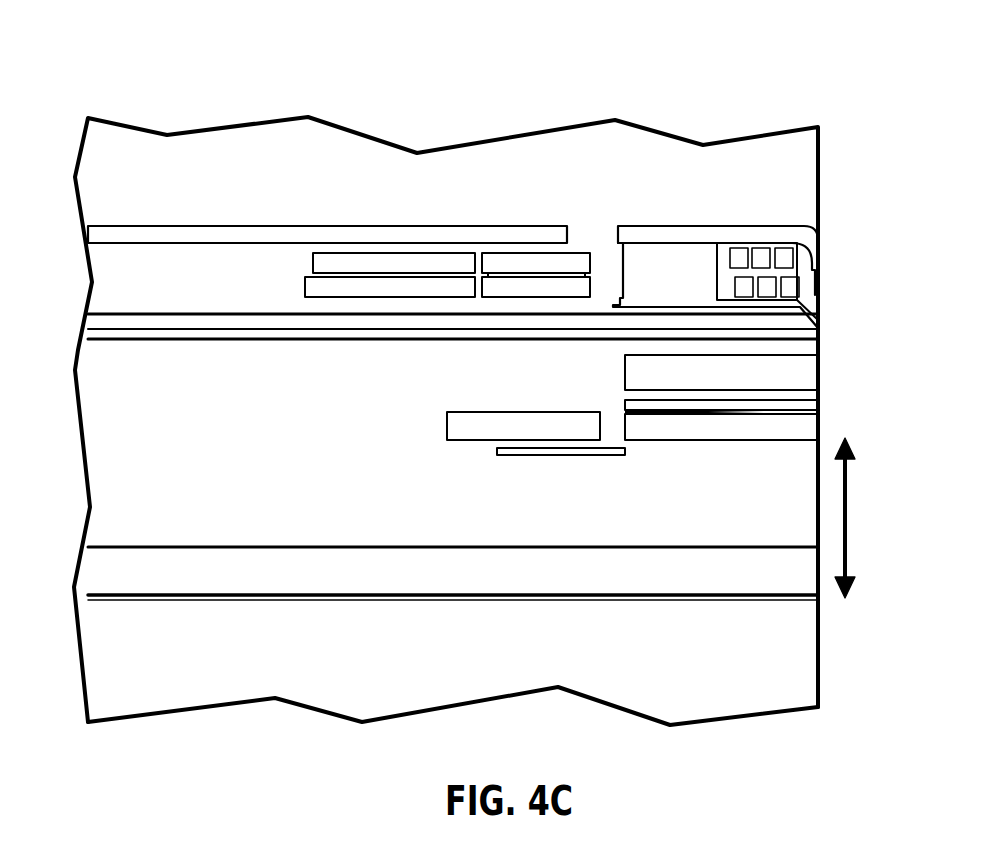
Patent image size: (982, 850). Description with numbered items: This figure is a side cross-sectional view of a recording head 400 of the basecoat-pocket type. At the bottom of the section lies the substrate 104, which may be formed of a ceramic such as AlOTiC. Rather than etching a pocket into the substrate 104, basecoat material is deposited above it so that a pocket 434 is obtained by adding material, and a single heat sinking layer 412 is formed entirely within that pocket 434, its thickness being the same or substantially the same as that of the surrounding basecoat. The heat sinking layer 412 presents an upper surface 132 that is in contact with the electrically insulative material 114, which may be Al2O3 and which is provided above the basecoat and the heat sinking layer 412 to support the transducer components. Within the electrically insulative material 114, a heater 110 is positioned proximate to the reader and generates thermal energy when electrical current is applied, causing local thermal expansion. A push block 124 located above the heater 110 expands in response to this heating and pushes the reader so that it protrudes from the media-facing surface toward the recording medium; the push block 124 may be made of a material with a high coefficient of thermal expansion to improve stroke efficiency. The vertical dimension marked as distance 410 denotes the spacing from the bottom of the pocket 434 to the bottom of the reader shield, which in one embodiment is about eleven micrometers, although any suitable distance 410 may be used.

The recording head 400 is at (868, 86).
The substrate 104 is at (138, 677).
The heater 110 is at (613, 452).
The electrically insulative material 114 is at (102, 382).
The push block 124 is at (458, 428).
The upper surface 132 is at (437, 547).
The distance 410 is at (845, 548).
The heat sinking layer 412 is at (763, 573).
The pocket 434 is at (798, 602).